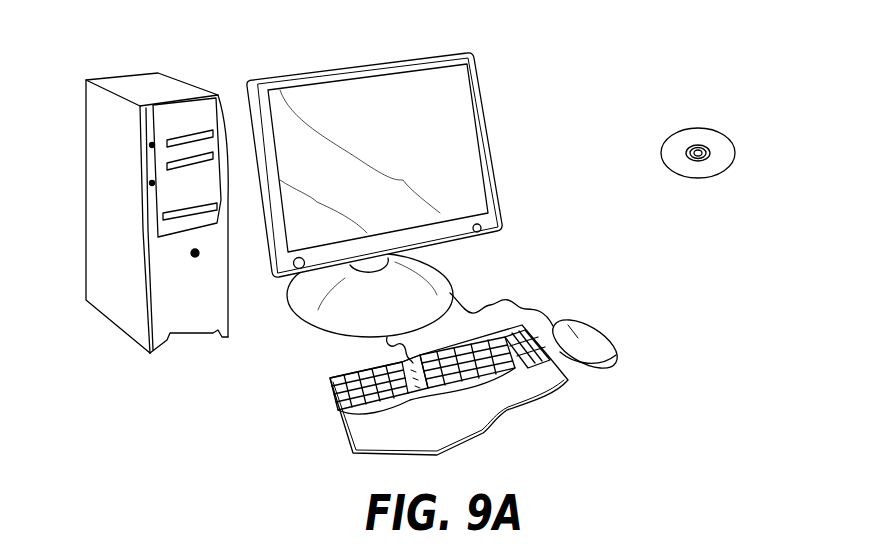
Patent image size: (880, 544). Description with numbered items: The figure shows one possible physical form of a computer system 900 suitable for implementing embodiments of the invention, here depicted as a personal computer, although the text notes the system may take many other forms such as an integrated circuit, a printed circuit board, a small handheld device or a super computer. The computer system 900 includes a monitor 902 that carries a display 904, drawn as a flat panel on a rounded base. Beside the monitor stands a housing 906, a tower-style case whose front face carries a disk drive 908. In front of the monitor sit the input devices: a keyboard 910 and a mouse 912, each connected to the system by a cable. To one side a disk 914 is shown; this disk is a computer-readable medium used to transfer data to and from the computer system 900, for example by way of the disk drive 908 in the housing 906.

The computer system 900 is at (620, 33).
The monitor 902 is at (493, 162).
The display 904 is at (447, 97).
The housing 906 is at (142, 84).
The disk drive 908 is at (210, 208).
The keyboard 910 is at (338, 423).
The mouse 912 is at (605, 335).
The disk 914 is at (717, 130).